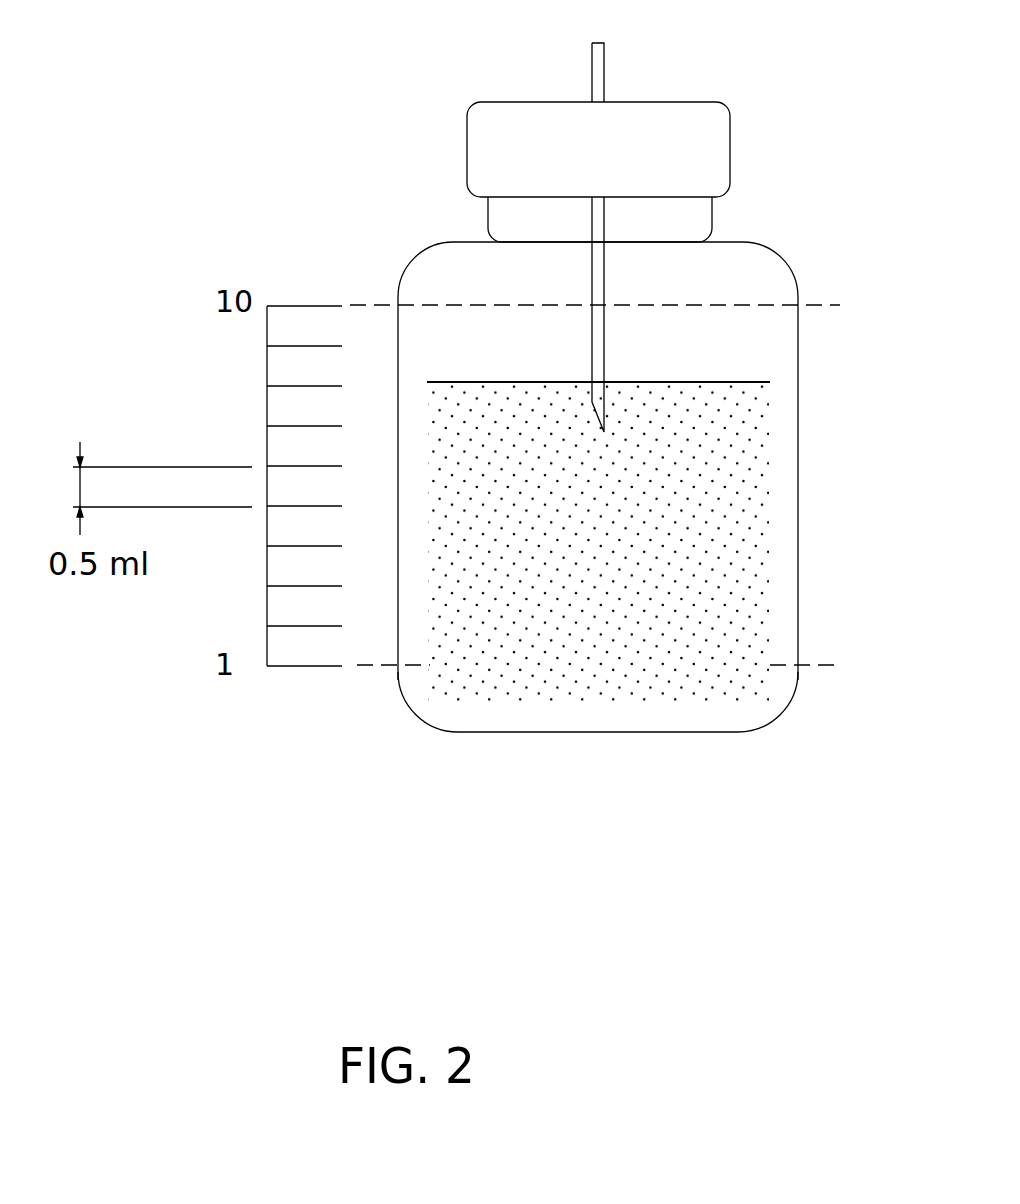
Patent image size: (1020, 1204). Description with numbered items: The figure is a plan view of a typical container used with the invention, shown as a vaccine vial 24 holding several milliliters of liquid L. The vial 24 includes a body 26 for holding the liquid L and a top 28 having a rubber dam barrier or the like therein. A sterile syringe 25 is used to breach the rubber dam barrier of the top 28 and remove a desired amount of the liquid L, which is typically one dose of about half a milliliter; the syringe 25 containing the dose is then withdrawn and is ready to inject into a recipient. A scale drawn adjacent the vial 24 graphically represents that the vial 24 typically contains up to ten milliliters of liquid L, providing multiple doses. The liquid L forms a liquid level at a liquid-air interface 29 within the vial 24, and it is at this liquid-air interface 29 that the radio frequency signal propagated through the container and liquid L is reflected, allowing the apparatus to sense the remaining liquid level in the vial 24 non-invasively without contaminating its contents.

The vial 24 is at (417, 257).
The sterile syringe 25 is at (605, 70).
The body 26 is at (783, 712).
The top 28 is at (730, 143).
The liquid-air interface 29 is at (733, 382).
The liquid L is at (475, 638).